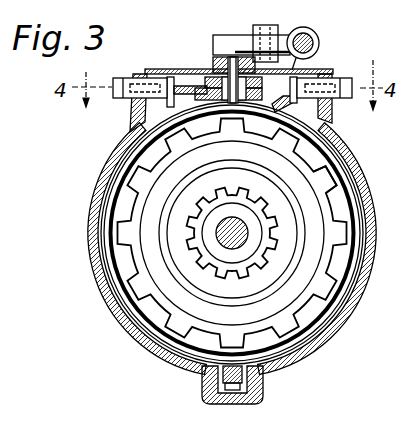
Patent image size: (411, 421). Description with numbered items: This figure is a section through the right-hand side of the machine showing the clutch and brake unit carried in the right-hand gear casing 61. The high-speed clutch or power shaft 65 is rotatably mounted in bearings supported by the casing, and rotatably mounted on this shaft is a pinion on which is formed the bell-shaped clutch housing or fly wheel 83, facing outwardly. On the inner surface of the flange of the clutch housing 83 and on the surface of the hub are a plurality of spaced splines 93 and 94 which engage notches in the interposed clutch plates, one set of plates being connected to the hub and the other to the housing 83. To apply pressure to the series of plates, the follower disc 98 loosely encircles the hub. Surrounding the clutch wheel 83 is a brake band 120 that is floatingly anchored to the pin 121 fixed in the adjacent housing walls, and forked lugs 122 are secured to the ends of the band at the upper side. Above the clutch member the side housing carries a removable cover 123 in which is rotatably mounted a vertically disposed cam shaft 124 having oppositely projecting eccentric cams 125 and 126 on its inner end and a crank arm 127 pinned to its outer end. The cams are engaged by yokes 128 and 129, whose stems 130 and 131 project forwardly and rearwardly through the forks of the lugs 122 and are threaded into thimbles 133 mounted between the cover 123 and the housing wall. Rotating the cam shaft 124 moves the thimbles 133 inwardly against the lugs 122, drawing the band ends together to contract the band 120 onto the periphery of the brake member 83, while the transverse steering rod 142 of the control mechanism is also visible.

The right-hand gear casing 61 is at (348, 157).
The high-speed clutch or power shaft 65 is at (240, 233).
The bell-shaped clutch housing or fly wheel 83 is at (150, 150).
The splines 93 is at (225, 272).
The splines 94 is at (314, 164).
The follower disc 98 is at (143, 207).
The brake band 120 is at (360, 277).
The pin 121 is at (257, 384).
The forked lugs 122 is at (170, 104).
The removable cover 123 is at (312, 70).
The cam shaft 124 is at (233, 63).
The eccentric cam 125 is at (222, 82).
The eccentric cam 126 is at (231, 100).
The crank arm 127 is at (245, 45).
The yoke 128 is at (247, 105).
The yoke 129 is at (268, 100).
The stem 130 is at (319, 51).
The stem 131 is at (165, 78).
The thimble 133 is at (128, 78).
The steering rod 142 is at (312, 37).